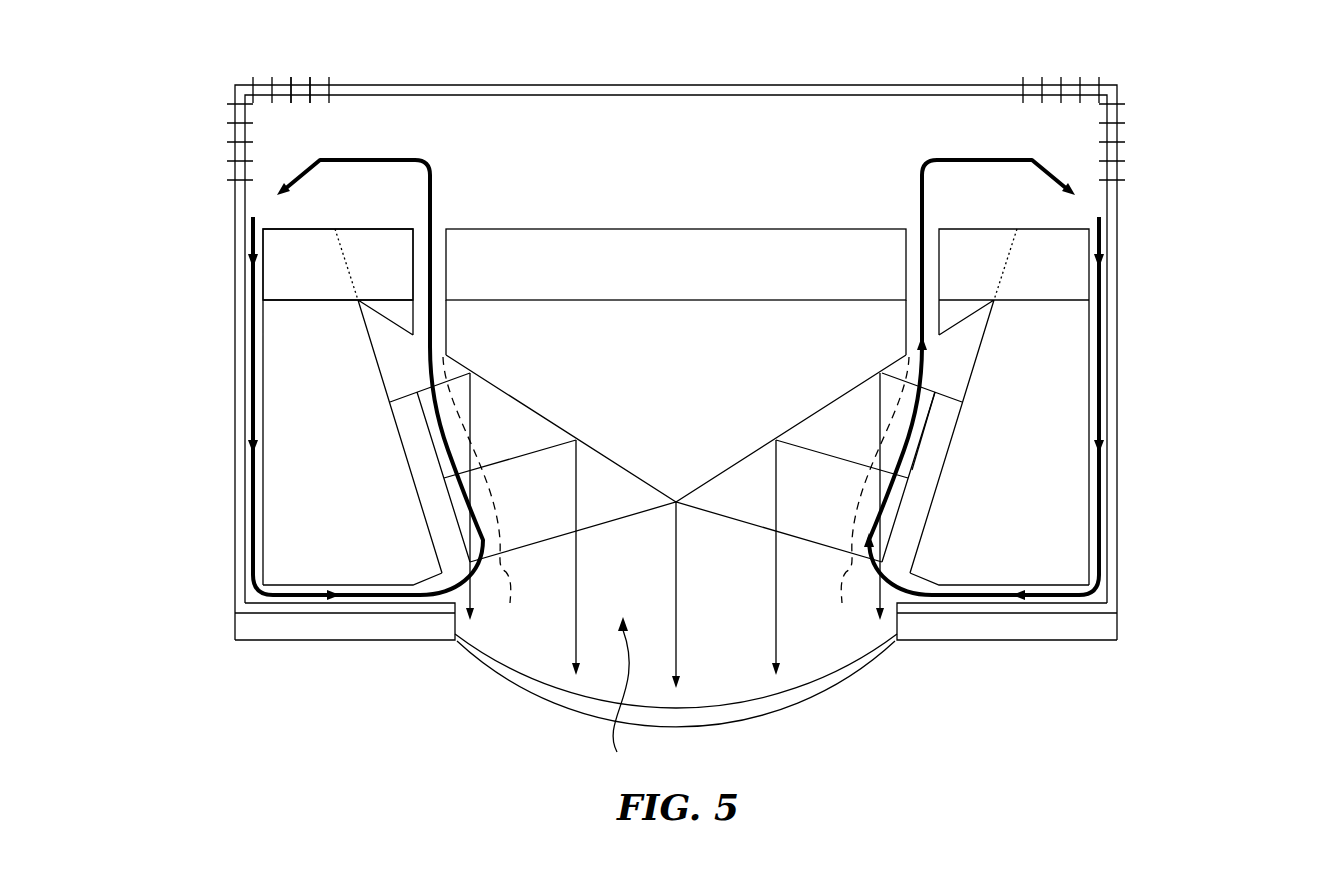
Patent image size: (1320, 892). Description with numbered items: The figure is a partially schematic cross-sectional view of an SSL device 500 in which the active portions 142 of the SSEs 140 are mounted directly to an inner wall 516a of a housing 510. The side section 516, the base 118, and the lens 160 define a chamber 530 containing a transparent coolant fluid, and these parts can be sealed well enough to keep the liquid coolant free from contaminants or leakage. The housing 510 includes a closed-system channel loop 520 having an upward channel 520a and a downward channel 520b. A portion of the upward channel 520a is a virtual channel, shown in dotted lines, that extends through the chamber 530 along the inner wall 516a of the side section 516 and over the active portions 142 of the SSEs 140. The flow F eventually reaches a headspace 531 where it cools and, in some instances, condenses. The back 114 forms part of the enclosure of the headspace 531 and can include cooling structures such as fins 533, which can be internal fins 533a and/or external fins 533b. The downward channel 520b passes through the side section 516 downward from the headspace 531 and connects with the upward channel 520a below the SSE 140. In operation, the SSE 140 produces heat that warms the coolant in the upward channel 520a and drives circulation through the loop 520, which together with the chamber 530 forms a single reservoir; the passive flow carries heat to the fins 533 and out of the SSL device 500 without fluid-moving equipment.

The SSL device 500 is at (1191, 116).
The back 114 is at (843, 85).
The headspace 531 is at (715, 122).
The fins 533 is at (205, 73).
The internal fins 533a is at (310, 103).
The external fins 533b is at (298, 80).
The base 118 is at (655, 255).
The SSEs 140 is at (912, 493).
The active portions 142 is at (927, 397).
The side section 516 is at (278, 335).
The housing 510 is at (278, 290).
The inner wall 516a is at (393, 421).
The upward channel 520a is at (420, 233).
The downward channel 520b is at (248, 237).
The closed-system channel loop 520 is at (232, 529).
The flow F is at (913, 327).
The lens 160 is at (570, 702).
The chamber 530 is at (609, 696).